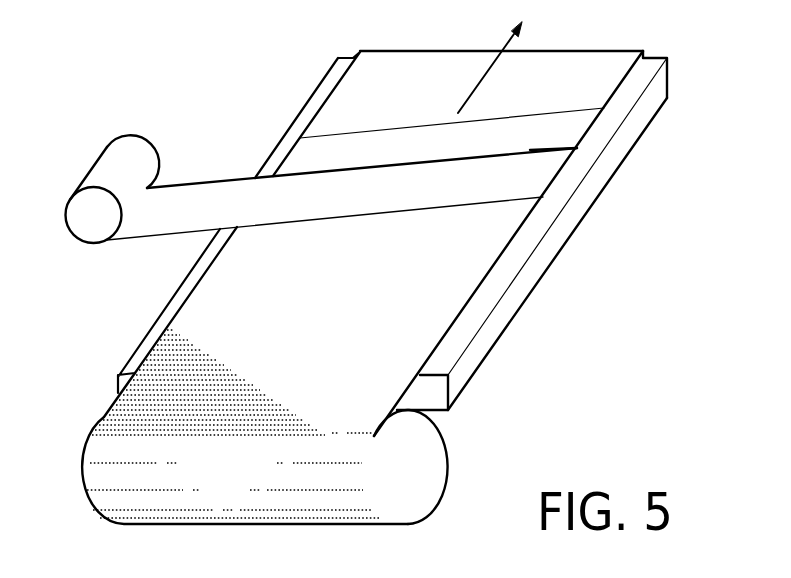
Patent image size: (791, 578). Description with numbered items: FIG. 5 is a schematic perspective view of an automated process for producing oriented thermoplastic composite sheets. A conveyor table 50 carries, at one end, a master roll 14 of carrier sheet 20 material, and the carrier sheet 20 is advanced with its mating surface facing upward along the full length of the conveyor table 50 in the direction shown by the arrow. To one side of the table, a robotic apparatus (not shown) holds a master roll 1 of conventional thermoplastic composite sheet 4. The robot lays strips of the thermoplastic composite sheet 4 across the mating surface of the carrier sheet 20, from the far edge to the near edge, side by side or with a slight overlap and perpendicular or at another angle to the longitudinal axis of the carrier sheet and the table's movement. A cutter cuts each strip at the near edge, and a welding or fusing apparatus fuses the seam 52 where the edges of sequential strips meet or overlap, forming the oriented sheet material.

The master roll 1 is at (96, 162).
The thermoplastic composite sheet 4 is at (373, 202).
The master roll 14 is at (448, 462).
The carrier sheet 20 is at (345, 318).
The conveyor table 50 is at (537, 283).
The seam 52 is at (530, 150).